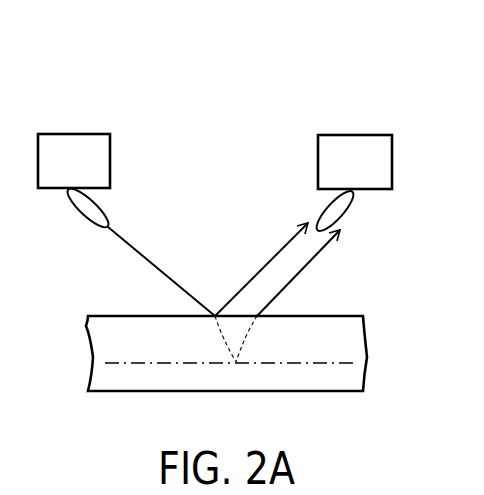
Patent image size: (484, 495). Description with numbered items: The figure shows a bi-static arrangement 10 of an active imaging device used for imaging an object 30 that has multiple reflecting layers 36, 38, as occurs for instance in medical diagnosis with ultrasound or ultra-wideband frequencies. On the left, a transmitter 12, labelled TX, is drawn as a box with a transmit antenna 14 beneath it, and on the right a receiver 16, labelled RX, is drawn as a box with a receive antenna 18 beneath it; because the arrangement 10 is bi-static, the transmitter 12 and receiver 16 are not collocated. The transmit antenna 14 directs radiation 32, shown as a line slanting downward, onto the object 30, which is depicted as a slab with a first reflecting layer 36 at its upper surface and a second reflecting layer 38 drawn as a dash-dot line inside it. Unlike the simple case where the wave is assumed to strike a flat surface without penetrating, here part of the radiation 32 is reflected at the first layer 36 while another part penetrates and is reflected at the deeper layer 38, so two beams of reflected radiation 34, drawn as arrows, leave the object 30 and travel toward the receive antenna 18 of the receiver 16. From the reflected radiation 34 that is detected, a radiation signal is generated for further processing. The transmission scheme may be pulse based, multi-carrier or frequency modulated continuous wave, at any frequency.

The bi-static arrangement 10 is at (371, 116).
The transmitter 12 is at (110, 165).
The transmit antenna 14 is at (108, 220).
The receiver 16 is at (392, 165).
The receive antenna 18 is at (350, 214).
The object 30 is at (366, 333).
The radiation 32 is at (152, 263).
The reflected radiation 34 is at (288, 245).
The reflecting layer 36 is at (98, 316).
The reflecting layer 38 is at (102, 364).